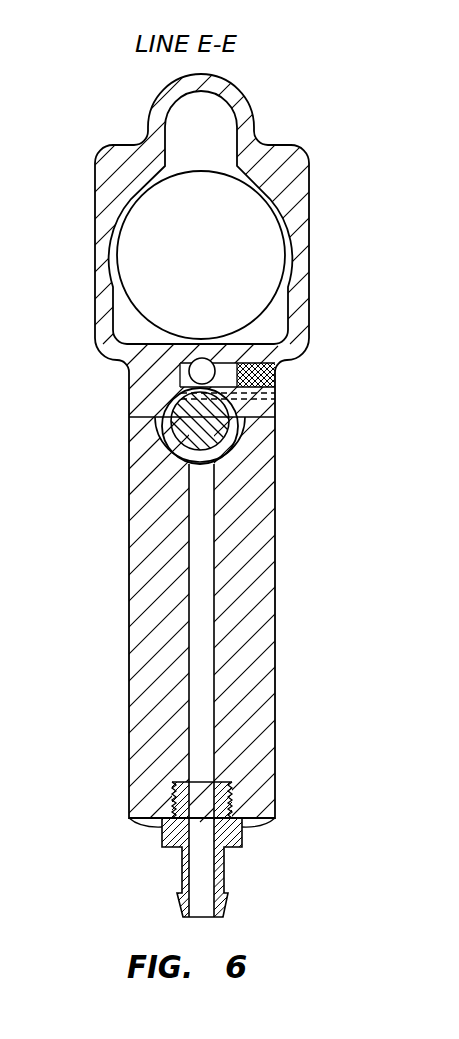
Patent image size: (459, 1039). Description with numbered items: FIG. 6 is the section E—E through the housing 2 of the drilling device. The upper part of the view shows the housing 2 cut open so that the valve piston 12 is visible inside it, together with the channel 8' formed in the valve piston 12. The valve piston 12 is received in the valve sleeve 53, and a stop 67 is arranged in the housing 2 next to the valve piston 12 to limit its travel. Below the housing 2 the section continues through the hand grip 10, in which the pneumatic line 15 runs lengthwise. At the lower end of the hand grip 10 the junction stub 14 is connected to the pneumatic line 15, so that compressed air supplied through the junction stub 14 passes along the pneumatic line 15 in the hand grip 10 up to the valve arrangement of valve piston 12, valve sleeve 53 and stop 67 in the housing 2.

The housing 2 is at (298, 168).
The channel 8' is at (200, 341).
The hand grip 10 is at (262, 513).
The valve piston 12 is at (178, 428).
The junction stub 14 is at (232, 833).
The pneumatic line 15 is at (205, 670).
The valve sleeve 53 is at (169, 448).
The stop 67 is at (273, 405).